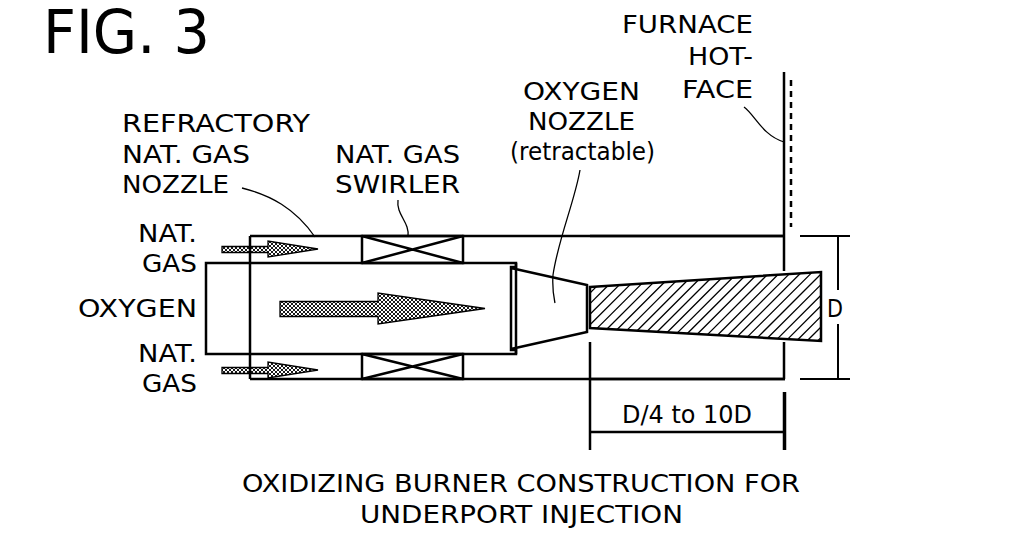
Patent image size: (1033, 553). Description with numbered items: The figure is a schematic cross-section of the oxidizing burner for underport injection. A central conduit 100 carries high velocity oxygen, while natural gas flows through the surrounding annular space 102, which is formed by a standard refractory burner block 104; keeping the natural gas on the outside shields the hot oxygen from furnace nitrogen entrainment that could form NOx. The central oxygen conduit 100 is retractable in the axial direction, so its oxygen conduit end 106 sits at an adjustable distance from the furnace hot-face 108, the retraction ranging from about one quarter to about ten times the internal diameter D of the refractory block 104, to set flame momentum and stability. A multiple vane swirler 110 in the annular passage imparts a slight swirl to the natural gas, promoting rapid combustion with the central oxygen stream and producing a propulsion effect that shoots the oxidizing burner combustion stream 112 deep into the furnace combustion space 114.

The central conduit 100 is at (287, 265).
The annular space 102 is at (497, 235).
The refractory burner block 104 is at (700, 235).
The oxygen conduit end 106 is at (590, 284).
The furnace hot-face 108 is at (784, 200).
The multiple vane swirler 110 is at (397, 403).
The oxidizing burner combustion stream 112 is at (748, 298).
The furnace combustion space 114 is at (908, 307).